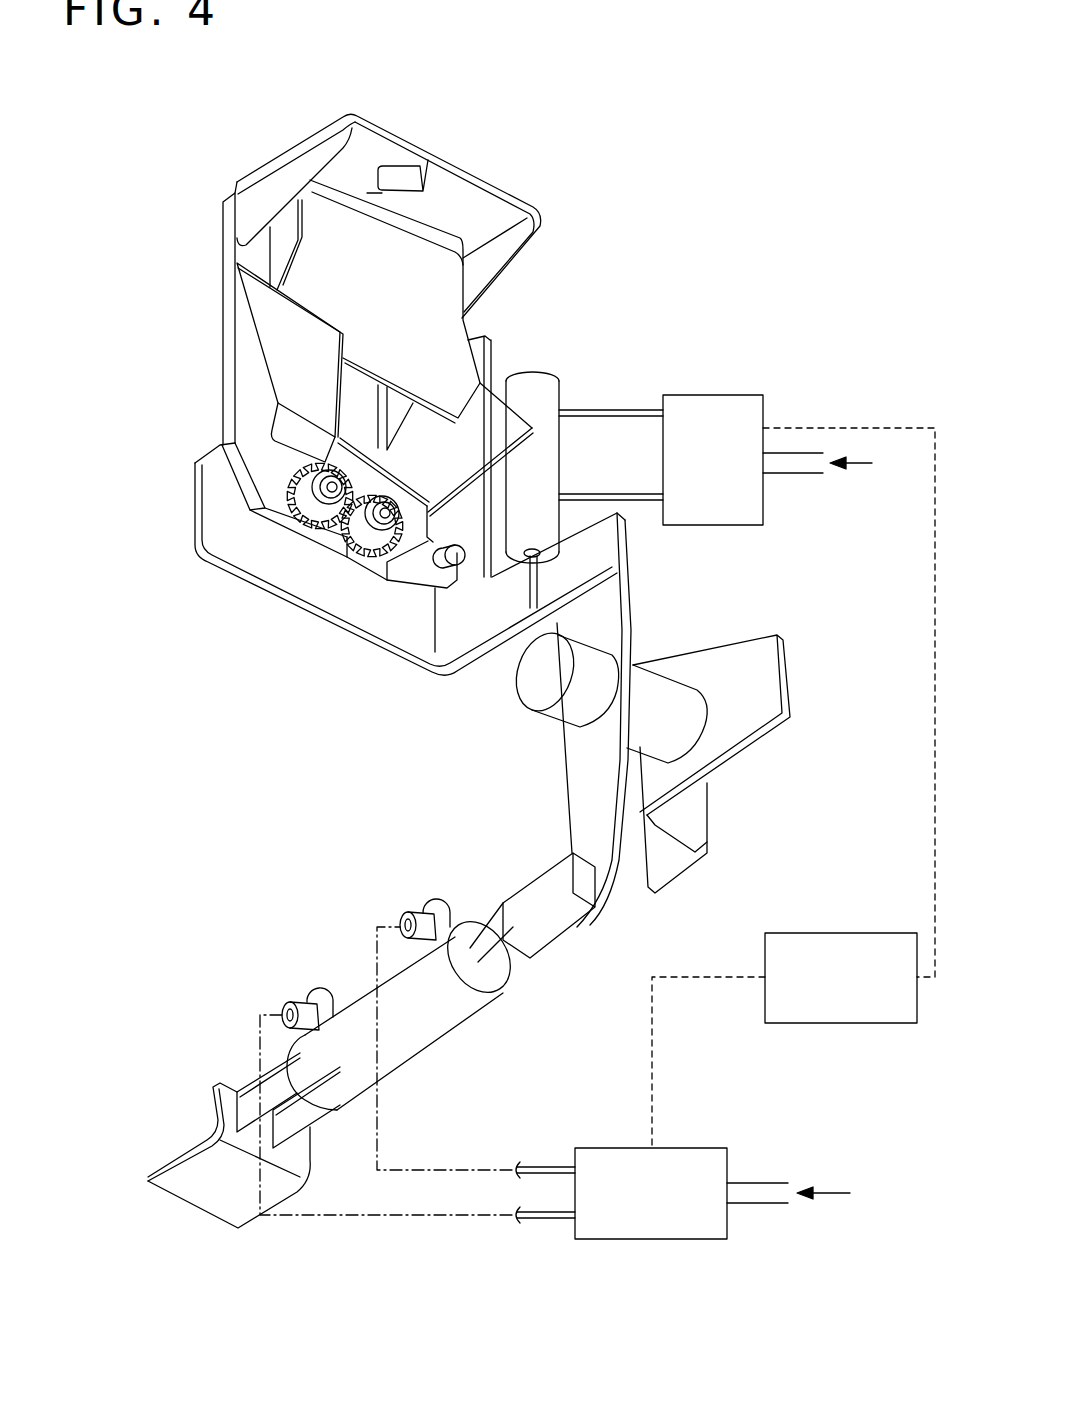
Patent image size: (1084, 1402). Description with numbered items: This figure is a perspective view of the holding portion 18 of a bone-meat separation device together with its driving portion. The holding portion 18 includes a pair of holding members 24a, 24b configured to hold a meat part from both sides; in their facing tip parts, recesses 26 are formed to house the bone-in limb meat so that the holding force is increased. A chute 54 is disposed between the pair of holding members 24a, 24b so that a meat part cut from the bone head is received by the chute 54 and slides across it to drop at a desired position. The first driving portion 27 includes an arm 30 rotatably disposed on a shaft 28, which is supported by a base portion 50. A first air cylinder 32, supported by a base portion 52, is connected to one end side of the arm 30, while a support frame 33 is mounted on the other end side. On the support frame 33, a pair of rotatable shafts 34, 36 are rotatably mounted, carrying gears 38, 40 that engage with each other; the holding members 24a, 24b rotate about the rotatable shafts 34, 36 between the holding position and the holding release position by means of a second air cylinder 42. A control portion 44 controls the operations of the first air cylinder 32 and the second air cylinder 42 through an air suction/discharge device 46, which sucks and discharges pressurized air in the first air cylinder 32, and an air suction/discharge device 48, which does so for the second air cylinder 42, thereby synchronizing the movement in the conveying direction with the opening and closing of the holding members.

The holding portion 18 is at (165, 270).
The holding member 24a is at (230, 308).
The holding member 24b is at (305, 153).
The recess 26 is at (405, 178).
The first driving portion 27 is at (352, 791).
The shaft 28 is at (528, 685).
The arm 30 is at (582, 790).
The first air cylinder 32 is at (400, 1048).
The support frame 33 is at (352, 612).
The rotatable shaft 34 is at (375, 540).
The rotatable shaft 36 is at (315, 502).
The gear 38 is at (317, 535).
The gear 40 is at (343, 538).
The second air cylinder 42 is at (533, 372).
The control portion 44 is at (870, 935).
The air suction/discharge device 46 is at (688, 1148).
The air suction/discharge device 48 is at (725, 395).
The base portion 50 is at (730, 680).
The base portion 52 is at (215, 1193).
The chute 54 is at (278, 337).